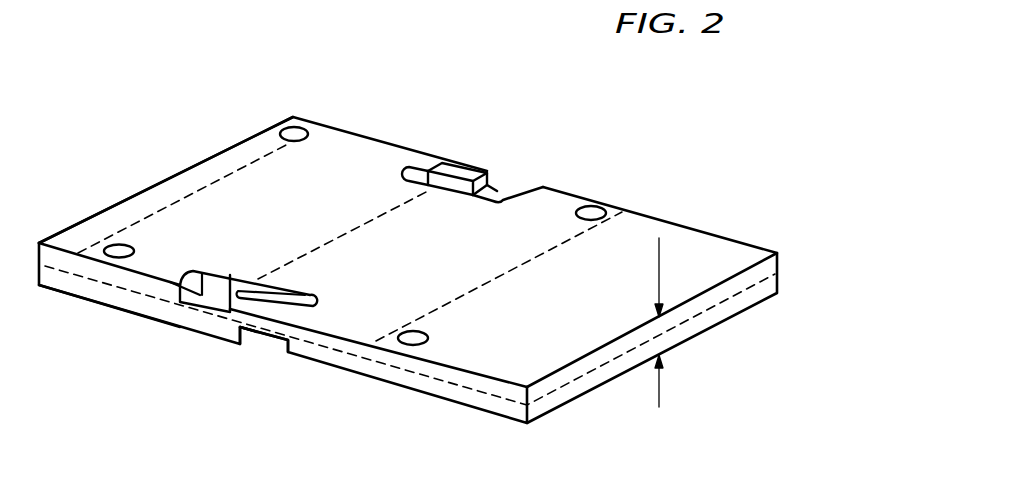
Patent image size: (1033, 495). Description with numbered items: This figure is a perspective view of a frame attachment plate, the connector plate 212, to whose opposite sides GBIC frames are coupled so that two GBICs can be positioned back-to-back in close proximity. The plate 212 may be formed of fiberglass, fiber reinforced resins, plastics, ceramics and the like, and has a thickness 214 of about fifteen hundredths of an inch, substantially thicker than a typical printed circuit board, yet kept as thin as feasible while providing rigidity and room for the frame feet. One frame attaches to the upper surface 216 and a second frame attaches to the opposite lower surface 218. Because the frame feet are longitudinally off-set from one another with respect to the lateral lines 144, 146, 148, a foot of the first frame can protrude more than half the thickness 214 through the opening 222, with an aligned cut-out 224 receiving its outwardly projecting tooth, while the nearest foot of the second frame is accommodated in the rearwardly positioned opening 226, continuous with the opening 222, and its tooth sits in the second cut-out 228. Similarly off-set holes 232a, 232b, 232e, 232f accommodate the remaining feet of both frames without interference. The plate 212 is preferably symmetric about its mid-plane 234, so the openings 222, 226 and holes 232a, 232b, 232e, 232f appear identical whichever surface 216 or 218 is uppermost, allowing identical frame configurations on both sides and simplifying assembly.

The lateral line 144 is at (245, 165).
The lateral line 146 is at (397, 212).
The lateral line 148 is at (577, 236).
The connector plate 212 is at (330, 358).
The thickness 214 is at (660, 388).
The upper surface 216 is at (197, 191).
The lower surface 218 is at (73, 297).
The opening 222 is at (253, 287).
The cut-out 224 is at (287, 347).
The rearwardly positioned opening 226 is at (217, 280).
The second cut-out 228 is at (193, 307).
The hole 232a is at (113, 246).
The hole 232b is at (289, 128).
The hole 232e is at (408, 345).
The hole 232f is at (589, 208).
The mid-plane 234 is at (463, 388).